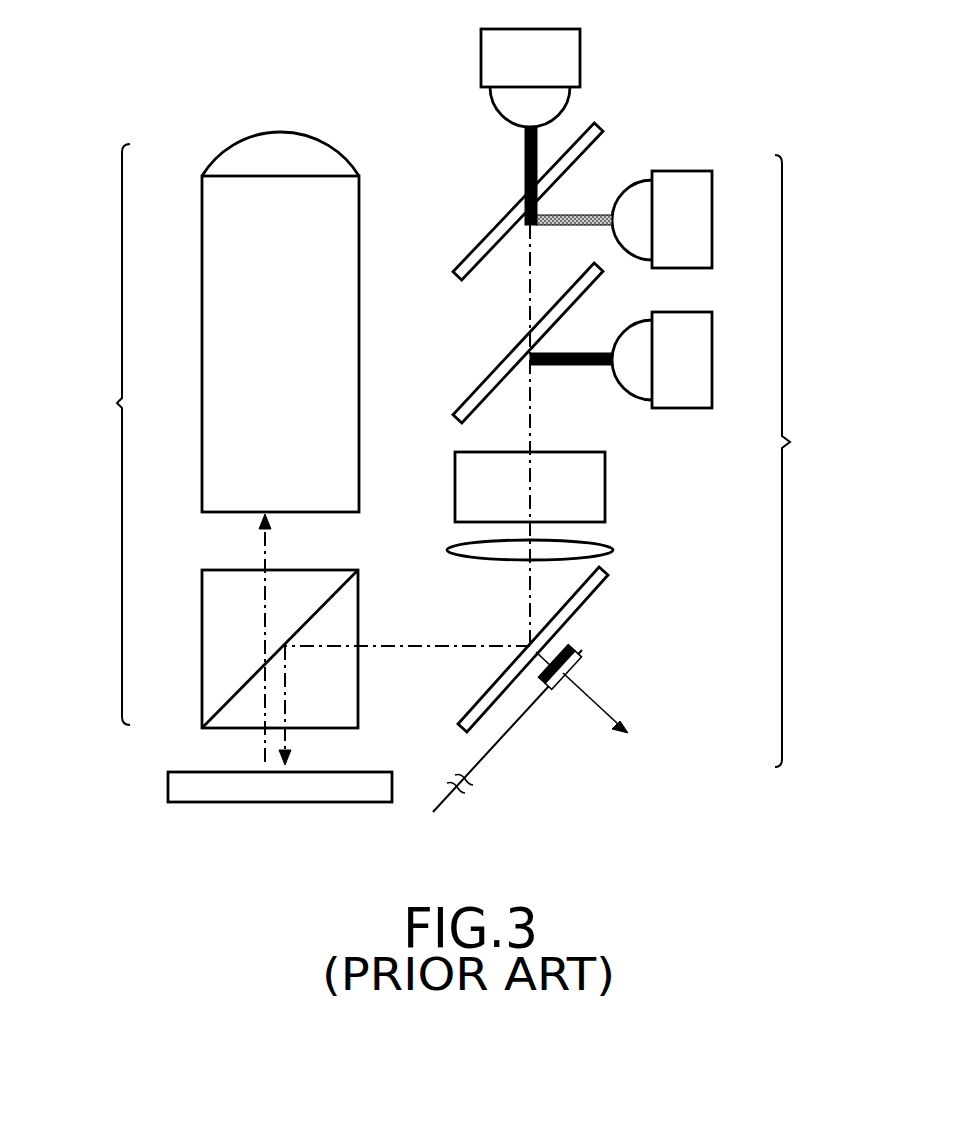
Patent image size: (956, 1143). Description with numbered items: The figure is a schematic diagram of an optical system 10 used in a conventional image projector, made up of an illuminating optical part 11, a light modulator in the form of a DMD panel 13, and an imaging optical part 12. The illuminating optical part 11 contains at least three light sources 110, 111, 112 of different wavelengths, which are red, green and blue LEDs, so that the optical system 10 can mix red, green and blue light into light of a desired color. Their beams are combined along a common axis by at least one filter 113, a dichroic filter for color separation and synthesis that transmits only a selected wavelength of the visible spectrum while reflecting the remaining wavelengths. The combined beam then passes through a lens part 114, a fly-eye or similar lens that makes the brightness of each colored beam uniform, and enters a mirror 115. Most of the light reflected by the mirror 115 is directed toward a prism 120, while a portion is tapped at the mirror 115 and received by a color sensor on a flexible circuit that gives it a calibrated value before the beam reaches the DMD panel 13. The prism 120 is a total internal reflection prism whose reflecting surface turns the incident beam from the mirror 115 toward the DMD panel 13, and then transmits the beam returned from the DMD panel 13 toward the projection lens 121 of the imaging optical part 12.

The optical system 10 is at (294, 24).
The illuminating optical part 11 is at (797, 443).
The imaging optical part 12 is at (117, 401).
The Digital Micromirror Display (DMD) panel 13 is at (282, 802).
The light source 110 is at (580, 57).
The light source 111 is at (712, 220).
The light source 112 is at (712, 360).
The filter 113 is at (483, 248).
The lens part 114 is at (628, 442).
The mirror 115 is at (592, 597).
The prism 120 is at (202, 652).
The projection lens 121 is at (202, 340).